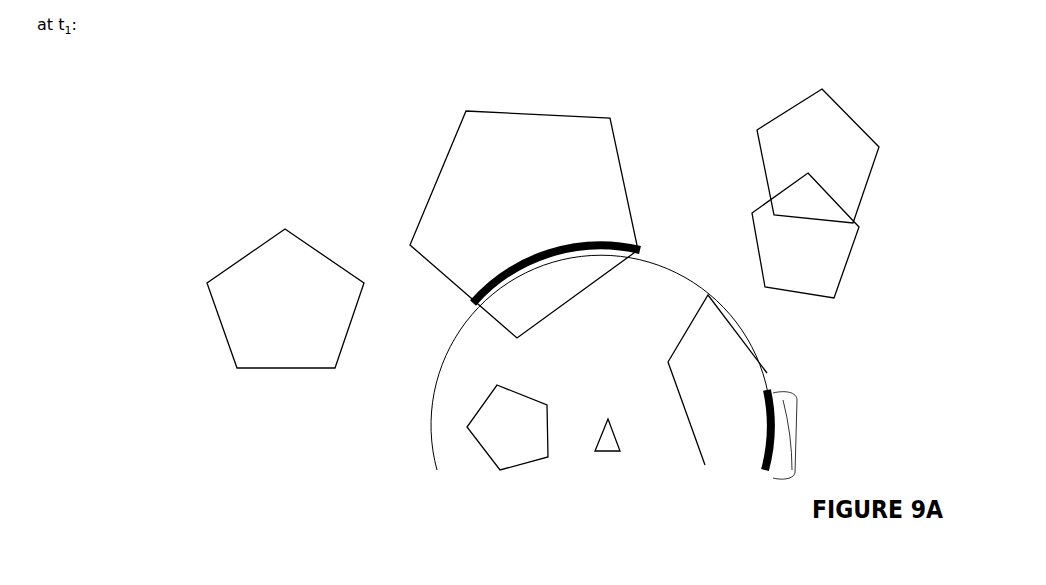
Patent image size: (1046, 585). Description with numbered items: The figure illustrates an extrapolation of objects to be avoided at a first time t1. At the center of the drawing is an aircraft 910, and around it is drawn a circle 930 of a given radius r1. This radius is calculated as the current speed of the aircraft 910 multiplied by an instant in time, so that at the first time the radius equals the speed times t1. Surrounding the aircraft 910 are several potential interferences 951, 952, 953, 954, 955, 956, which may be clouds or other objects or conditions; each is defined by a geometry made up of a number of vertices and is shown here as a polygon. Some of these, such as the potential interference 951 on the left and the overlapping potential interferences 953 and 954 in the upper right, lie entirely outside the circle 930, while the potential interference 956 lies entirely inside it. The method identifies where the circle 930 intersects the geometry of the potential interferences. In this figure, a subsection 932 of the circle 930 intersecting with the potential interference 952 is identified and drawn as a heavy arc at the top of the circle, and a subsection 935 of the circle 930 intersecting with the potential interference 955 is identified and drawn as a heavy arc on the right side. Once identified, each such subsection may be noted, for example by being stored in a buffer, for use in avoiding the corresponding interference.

The aircraft 910 is at (620, 451).
The circle 930 is at (430, 408).
The subsection of the circle 932 is at (633, 213).
The subsection of the circle 935 is at (811, 434).
The potential interference 951 is at (232, 257).
The potential interference 952 is at (467, 162).
The potential interference 953 is at (796, 130).
The potential interference 954 is at (812, 260).
The potential interference 955 is at (728, 377).
The potential interference 956 is at (517, 417).